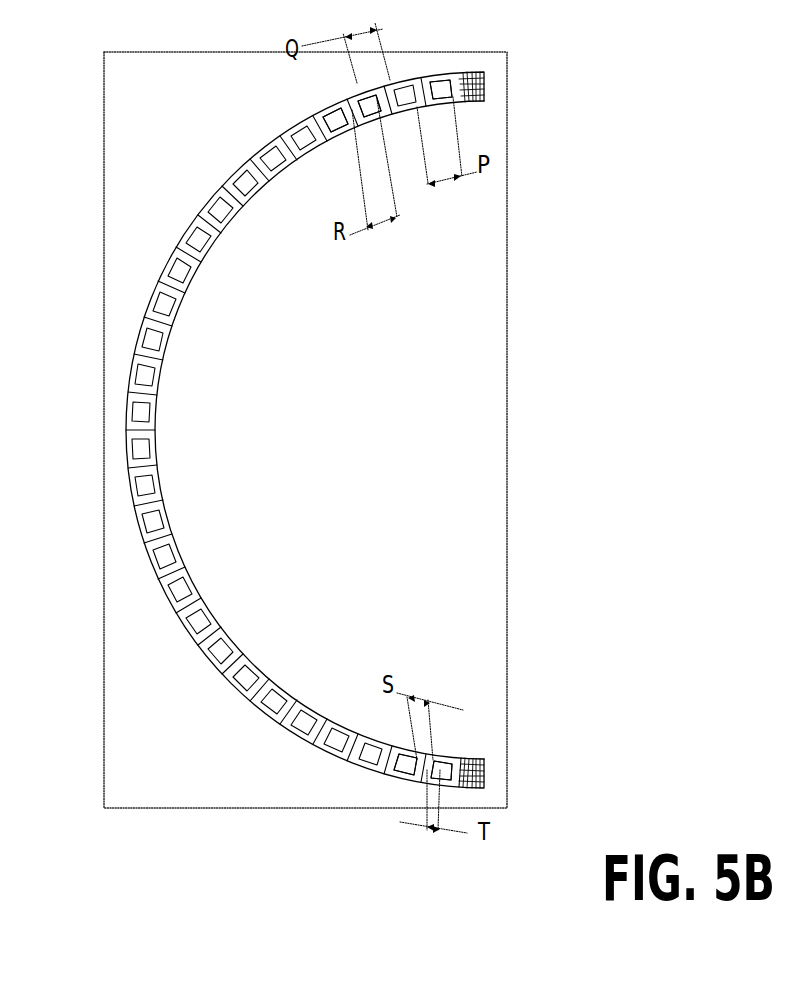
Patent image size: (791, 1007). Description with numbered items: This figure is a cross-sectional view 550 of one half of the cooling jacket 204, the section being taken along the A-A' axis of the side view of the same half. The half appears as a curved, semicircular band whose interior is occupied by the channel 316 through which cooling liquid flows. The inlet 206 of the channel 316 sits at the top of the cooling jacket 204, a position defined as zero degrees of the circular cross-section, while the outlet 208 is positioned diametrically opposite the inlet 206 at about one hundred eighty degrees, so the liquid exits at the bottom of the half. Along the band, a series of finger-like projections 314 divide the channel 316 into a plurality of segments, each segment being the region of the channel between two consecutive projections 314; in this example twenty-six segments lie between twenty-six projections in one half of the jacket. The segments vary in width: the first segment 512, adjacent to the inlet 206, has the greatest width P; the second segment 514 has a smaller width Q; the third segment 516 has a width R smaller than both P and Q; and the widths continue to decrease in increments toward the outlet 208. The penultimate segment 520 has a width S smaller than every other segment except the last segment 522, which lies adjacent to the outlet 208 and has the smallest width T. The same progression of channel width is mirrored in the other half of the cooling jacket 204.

The cross-sectional view 550 is at (624, 46).
The cooling jacket 204 is at (130, 327).
The inlet 206 is at (480, 93).
The outlet 208 is at (470, 770).
The finger-like projections 314 is at (168, 237).
The channel 316 is at (224, 265).
The first segment 512 is at (442, 92).
The second segment 514 is at (387, 111).
The third segment 516 is at (340, 130).
The penultimate segment 520 is at (408, 764).
The last segment 522 is at (443, 765).